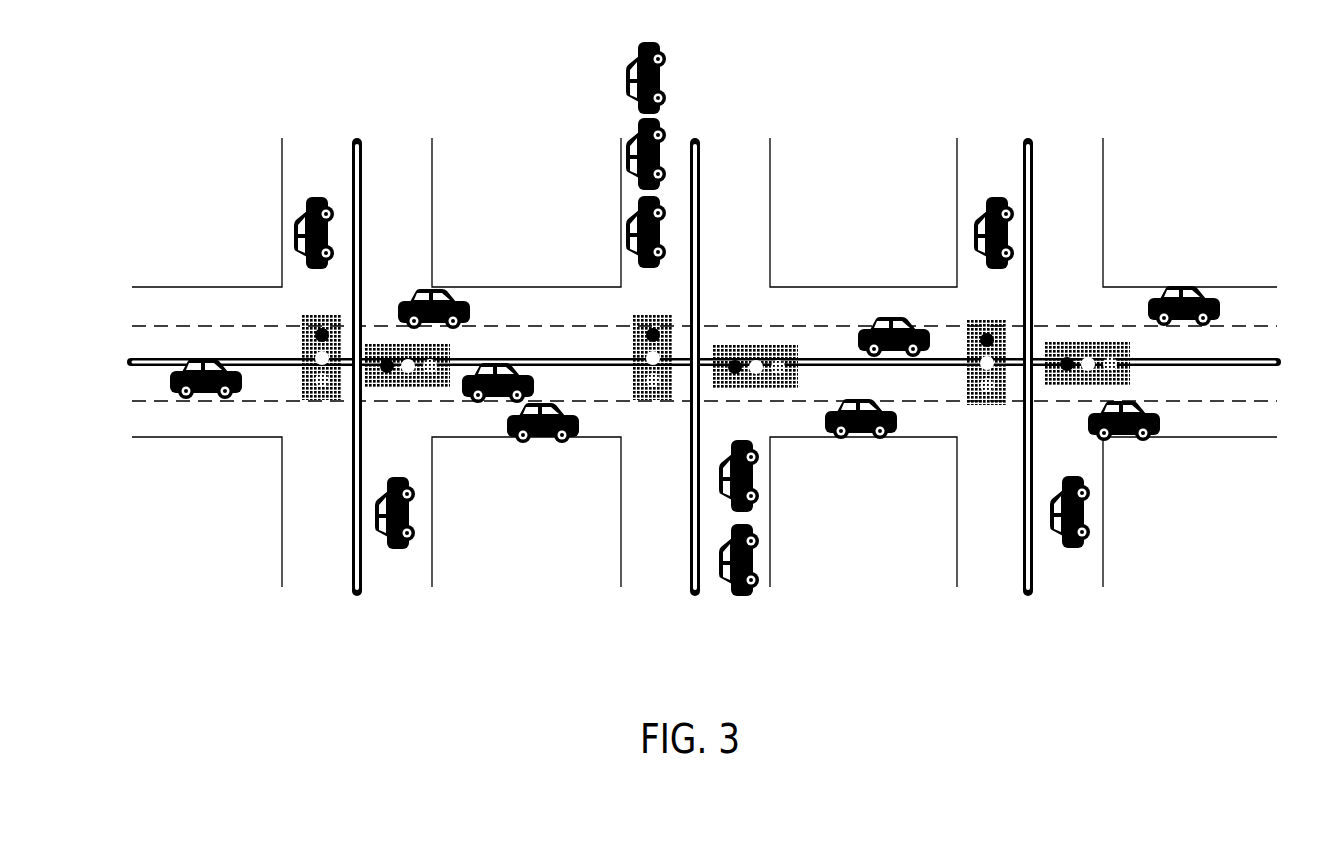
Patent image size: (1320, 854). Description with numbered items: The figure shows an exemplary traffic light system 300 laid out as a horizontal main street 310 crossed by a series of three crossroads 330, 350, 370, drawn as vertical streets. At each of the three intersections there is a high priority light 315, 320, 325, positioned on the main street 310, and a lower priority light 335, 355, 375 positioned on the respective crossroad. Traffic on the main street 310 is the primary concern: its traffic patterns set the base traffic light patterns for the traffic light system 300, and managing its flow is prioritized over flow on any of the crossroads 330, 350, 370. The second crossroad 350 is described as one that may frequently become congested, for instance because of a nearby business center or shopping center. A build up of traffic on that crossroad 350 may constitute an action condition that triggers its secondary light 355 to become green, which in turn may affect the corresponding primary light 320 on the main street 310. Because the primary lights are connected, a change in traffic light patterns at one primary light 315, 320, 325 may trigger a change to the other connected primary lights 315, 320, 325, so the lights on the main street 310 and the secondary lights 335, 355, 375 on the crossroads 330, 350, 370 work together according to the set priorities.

The traffic light system 300 is at (143, 83).
The main street 310 is at (666, 348).
The high priority light 315 is at (322, 373).
The high priority light 320 is at (653, 374).
The high priority light 325 is at (987, 376).
The crossroad 330 is at (414, 349).
The lower priority light 335 is at (407, 388).
The crossroad 350 is at (759, 349).
The lower priority light 355 is at (755, 389).
The crossroad 370 is at (1096, 354).
The lower priority light 375 is at (1087, 339).